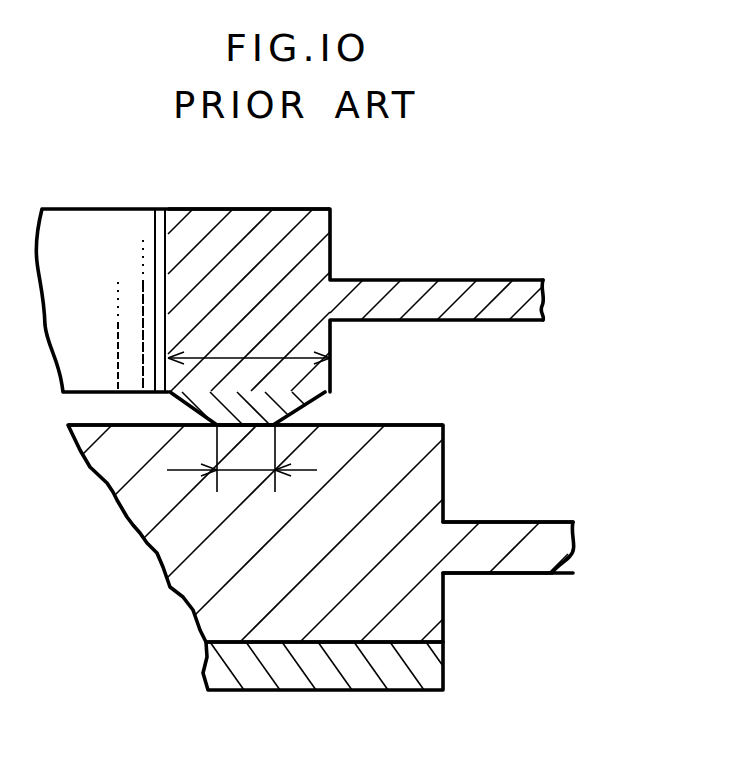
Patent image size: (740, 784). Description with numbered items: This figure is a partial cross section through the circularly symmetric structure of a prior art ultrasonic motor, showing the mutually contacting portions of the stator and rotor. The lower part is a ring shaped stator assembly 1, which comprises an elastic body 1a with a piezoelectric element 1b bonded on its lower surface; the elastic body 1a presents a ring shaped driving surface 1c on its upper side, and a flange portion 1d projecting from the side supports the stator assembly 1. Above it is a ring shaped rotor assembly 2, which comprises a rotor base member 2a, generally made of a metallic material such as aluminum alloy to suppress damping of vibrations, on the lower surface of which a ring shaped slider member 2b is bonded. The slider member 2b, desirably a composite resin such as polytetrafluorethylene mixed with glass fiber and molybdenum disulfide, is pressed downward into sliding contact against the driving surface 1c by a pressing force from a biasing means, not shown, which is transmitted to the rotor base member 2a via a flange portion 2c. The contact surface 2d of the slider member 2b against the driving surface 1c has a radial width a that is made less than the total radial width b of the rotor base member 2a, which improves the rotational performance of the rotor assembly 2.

The stator assembly 1 is at (370, 554).
The elastic body 1a is at (431, 476).
The piezoelectric element 1b is at (417, 666).
The driving surface 1c is at (368, 426).
The flange portion 1d is at (540, 562).
The rotor assembly 2 is at (288, 372).
The rotor base member 2a is at (299, 209).
The slider member 2b is at (182, 405).
The flange portion 2c is at (449, 290).
The contact surface 2d is at (240, 428).